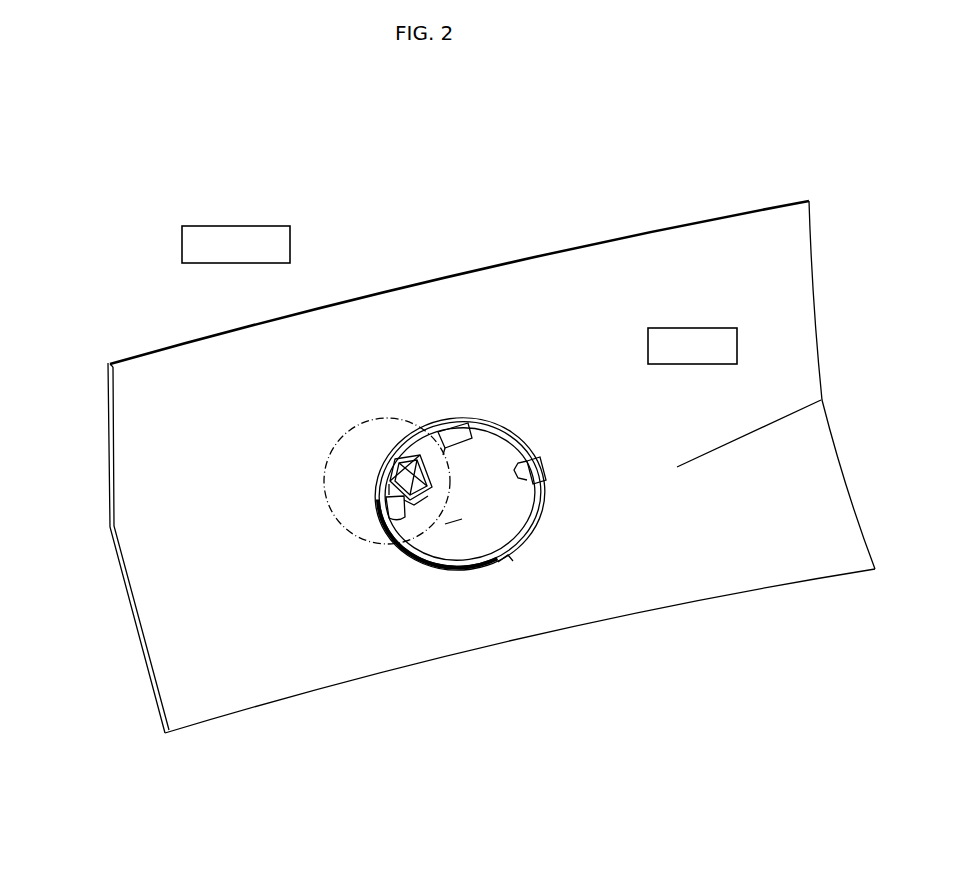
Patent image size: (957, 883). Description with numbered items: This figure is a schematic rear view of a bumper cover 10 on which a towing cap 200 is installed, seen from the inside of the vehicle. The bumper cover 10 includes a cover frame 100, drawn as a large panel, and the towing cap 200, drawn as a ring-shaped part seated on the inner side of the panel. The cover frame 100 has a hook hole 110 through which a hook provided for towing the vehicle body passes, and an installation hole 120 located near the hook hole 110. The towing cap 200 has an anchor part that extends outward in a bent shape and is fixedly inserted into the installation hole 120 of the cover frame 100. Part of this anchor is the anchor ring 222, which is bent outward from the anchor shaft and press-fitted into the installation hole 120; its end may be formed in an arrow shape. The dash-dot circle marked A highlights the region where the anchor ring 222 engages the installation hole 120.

The bumper cover 10 is at (434, 141).
The cover frame 100 is at (193, 421).
The hook hole 110 is at (453, 522).
The installation hole 120 is at (393, 458).
The towing cap 200 is at (436, 481).
The anchor ring 222 is at (428, 469).
The region A is at (324, 484).